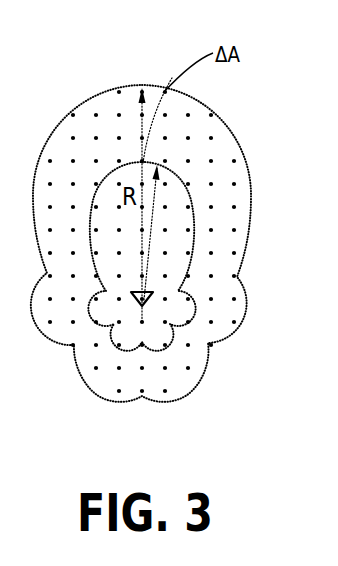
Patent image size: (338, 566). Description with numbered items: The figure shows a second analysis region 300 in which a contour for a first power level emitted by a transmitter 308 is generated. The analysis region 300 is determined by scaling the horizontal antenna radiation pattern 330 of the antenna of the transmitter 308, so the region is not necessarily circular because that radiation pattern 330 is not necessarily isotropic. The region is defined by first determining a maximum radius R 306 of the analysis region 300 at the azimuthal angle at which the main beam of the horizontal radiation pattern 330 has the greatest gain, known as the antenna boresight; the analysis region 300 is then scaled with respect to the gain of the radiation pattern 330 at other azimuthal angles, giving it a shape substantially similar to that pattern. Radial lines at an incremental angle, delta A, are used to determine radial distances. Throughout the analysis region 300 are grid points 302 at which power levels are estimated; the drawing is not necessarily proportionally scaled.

The second analysis region 300 is at (240, 322).
The grid points 302 is at (72, 139).
The maximum radius 306 is at (141, 130).
The transmitter 308 is at (132, 297).
The horizontal antenna radiation pattern 330 is at (192, 247).